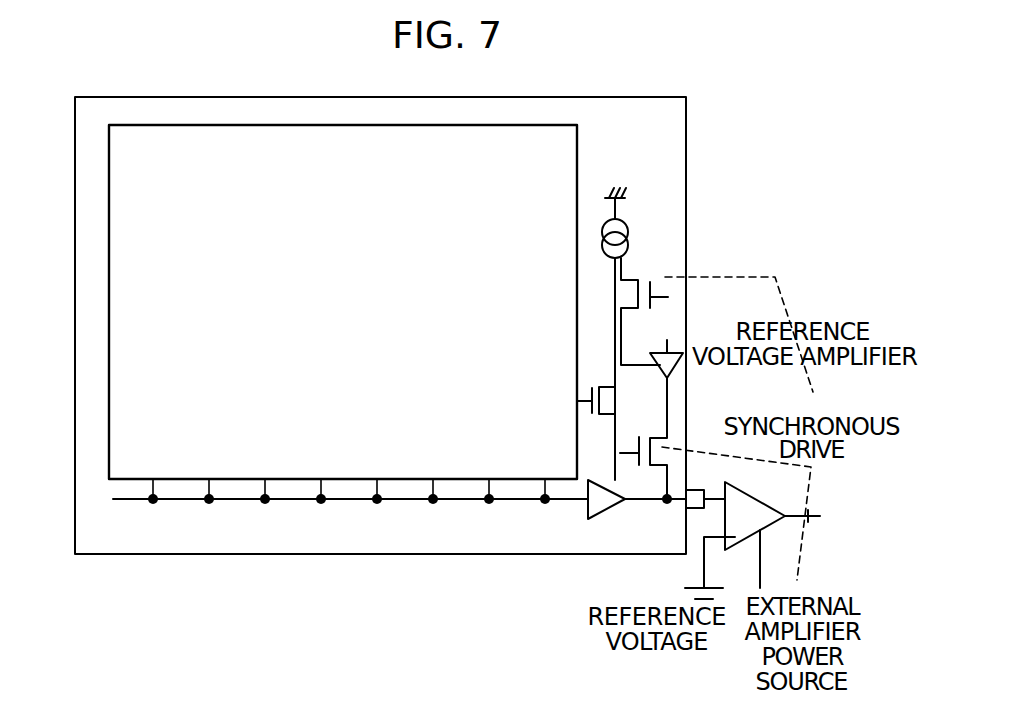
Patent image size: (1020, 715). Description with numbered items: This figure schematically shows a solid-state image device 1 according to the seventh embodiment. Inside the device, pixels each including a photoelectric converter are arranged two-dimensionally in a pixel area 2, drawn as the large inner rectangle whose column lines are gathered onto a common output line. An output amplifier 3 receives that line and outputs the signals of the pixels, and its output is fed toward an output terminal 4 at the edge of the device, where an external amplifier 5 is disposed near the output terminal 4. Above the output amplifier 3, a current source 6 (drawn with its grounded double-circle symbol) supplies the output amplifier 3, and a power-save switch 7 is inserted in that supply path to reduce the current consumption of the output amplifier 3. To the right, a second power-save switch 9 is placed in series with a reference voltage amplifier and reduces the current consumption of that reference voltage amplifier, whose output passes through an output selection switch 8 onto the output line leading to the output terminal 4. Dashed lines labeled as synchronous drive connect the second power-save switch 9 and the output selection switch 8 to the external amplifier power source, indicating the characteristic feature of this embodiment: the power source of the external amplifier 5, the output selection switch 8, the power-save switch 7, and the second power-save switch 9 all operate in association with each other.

The solid-state image device 1 is at (687, 118).
The pixel area 2 is at (579, 138).
The output amplifier 3 is at (605, 510).
The output terminal 4 is at (690, 489).
The external amplifier 5 is at (757, 493).
The current source 6 is at (627, 222).
The power-save switch 7 is at (589, 376).
The output selection switch 8 is at (647, 434).
The second power-save switch 9 is at (643, 277).